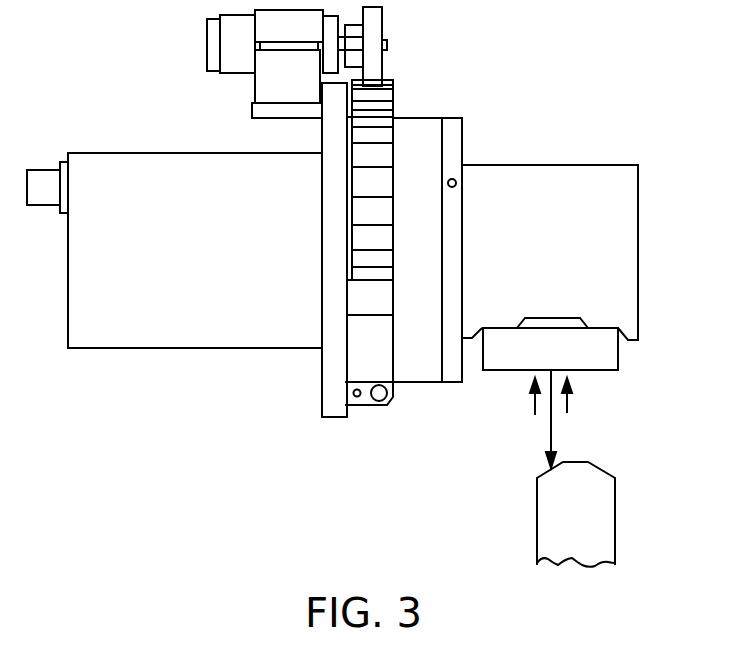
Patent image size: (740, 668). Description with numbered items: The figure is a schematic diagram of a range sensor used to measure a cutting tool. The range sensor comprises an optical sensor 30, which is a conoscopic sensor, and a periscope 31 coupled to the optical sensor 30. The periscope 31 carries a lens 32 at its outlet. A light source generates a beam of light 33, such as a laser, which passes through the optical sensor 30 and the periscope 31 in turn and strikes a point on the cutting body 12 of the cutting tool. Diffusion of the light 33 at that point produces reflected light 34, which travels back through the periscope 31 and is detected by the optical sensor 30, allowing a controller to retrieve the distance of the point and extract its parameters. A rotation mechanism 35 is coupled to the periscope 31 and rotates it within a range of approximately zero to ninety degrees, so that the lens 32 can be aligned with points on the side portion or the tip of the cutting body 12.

The optical sensor 30 is at (158, 333).
The periscope 31 is at (537, 172).
The lens 32 is at (608, 360).
The beam of light 33 is at (552, 425).
The reflected light 34 is at (533, 403).
The rotation mechanism 35 is at (387, 97).
The cutting body 12 is at (607, 522).